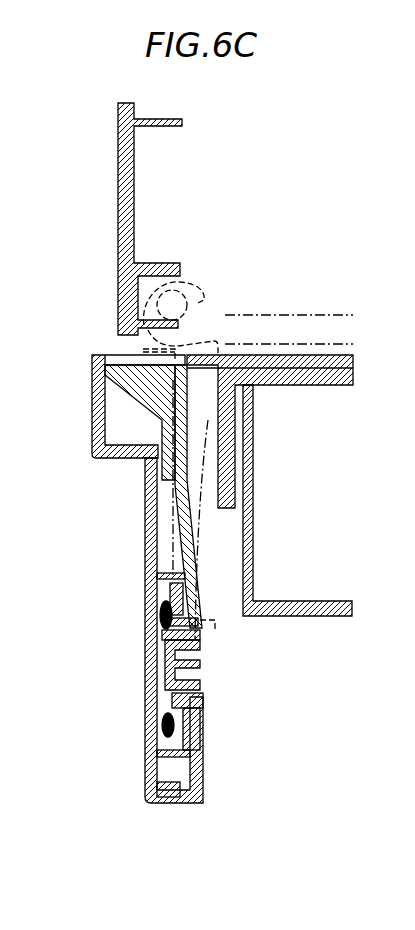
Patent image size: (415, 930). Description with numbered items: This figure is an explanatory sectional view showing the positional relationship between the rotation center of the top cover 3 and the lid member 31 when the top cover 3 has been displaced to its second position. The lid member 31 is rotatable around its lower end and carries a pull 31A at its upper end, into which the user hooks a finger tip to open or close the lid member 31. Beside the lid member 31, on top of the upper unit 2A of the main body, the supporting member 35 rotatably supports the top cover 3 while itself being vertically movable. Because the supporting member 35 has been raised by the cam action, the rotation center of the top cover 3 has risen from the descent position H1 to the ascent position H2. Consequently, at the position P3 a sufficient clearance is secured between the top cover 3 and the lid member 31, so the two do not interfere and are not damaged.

The top cover 3 is at (118, 216).
The position P3 is at (110, 342).
The descent position H1 is at (310, 346).
The ascent position H2 is at (310, 317).
The pull 31A is at (92, 428).
The lid member 31 is at (145, 536).
The supporting member 35 is at (199, 507).
The upper unit 2A is at (311, 617).